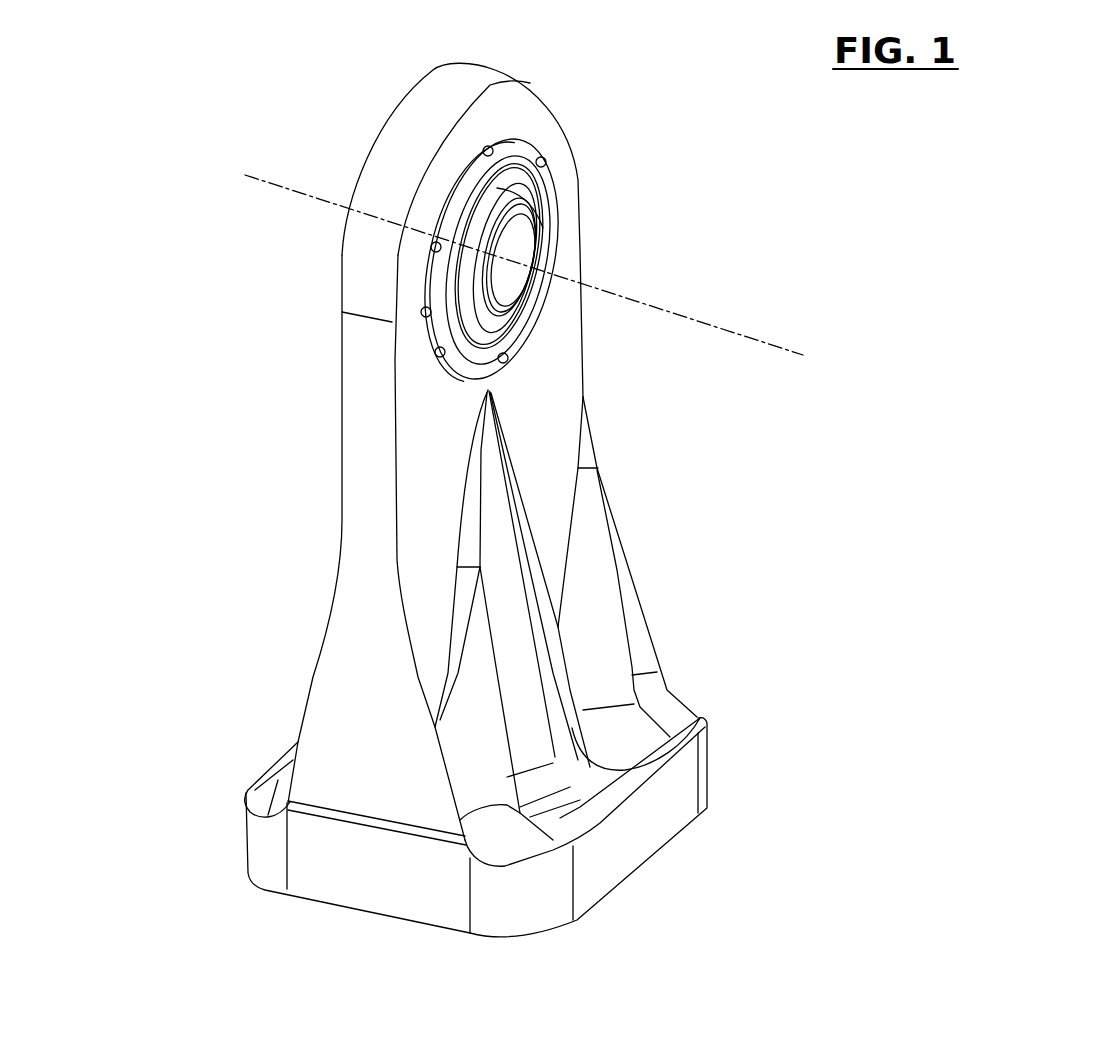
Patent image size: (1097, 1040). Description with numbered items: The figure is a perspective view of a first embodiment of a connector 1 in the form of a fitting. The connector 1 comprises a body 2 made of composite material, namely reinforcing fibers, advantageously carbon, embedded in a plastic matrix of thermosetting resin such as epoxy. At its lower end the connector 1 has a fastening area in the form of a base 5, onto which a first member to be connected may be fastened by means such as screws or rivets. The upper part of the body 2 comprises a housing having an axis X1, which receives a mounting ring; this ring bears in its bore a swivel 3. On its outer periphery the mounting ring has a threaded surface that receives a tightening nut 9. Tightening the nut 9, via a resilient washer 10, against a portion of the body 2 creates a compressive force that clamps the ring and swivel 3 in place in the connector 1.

The connector 1 is at (128, 237).
The body 2 is at (561, 381).
The swivel 3 is at (510, 183).
The base 5 is at (642, 837).
The tightening nut 9 is at (437, 358).
The resilient washer 10 is at (433, 270).
The axis of the housing X1 is at (526, 265).